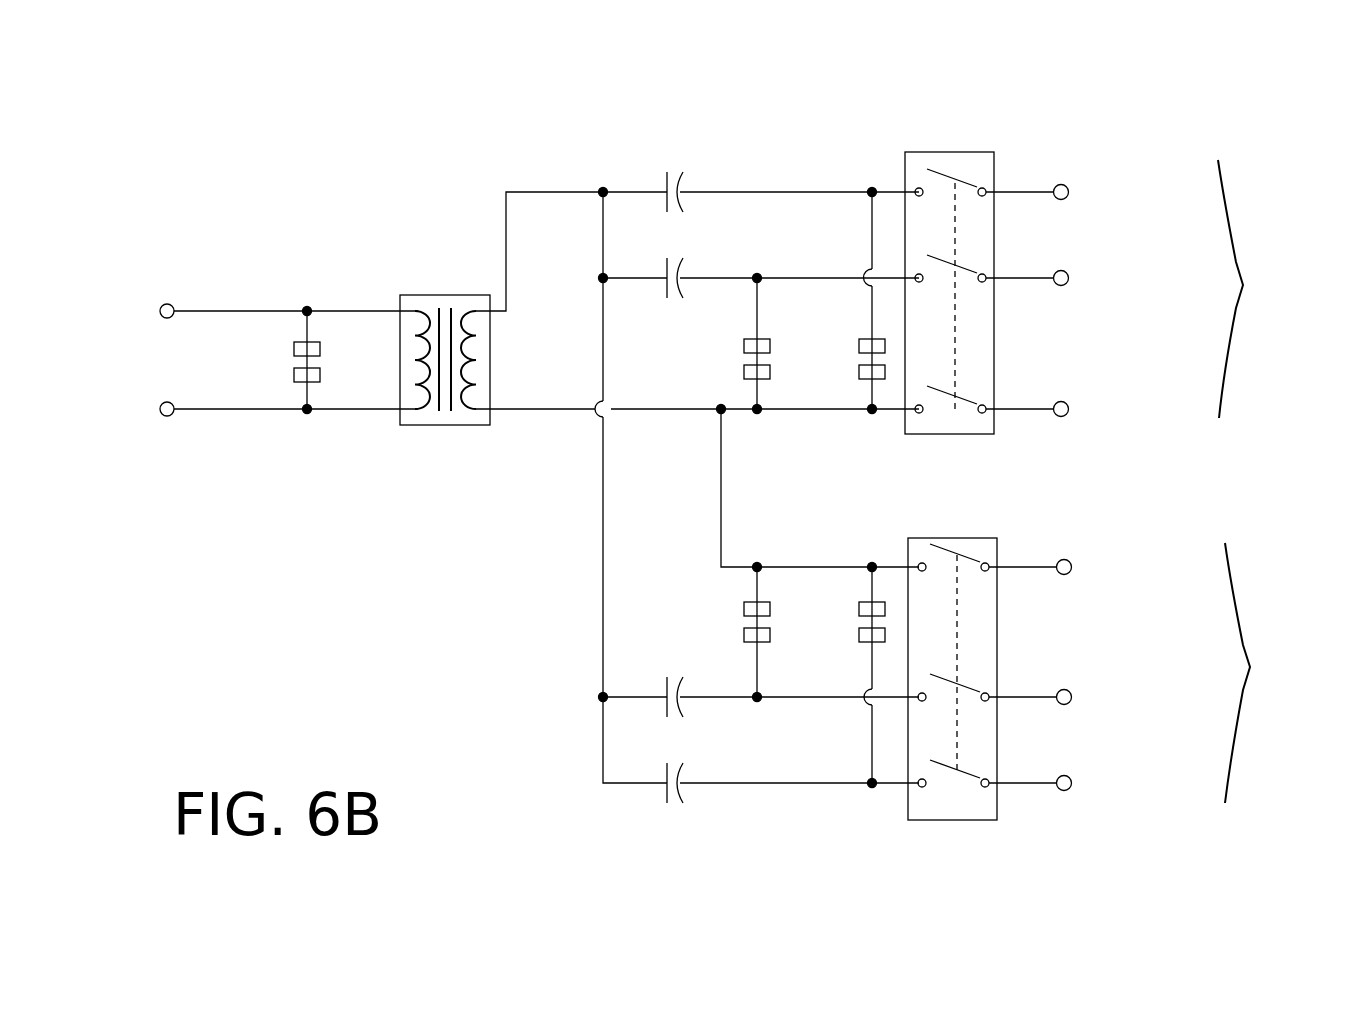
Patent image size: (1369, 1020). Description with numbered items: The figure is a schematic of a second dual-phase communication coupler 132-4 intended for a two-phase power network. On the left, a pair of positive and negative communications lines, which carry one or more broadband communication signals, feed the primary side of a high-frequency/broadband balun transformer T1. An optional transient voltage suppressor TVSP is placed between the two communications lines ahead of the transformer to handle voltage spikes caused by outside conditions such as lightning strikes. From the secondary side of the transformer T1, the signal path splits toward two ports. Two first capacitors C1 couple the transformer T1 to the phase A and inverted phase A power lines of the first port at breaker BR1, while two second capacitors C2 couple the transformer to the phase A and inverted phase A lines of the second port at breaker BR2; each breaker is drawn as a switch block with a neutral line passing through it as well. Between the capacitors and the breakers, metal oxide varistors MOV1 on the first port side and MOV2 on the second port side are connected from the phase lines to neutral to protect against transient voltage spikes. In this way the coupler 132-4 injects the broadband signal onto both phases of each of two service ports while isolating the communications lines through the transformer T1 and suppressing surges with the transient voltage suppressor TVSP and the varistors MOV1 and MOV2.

The communication coupler 132-4 is at (308, 137).
The transient voltage suppressor TVSP is at (274, 360).
The high-frequency/broadband balun transformer T1 is at (445, 343).
The first capacitors C1 is at (674, 222).
The second capacitors C2 is at (677, 759).
The metal oxide varistor MOV1 is at (781, 303).
The metal oxide varistor MOV2 is at (781, 675).
The breaker BR1 is at (987, 313).
The breaker BR2 is at (990, 694).